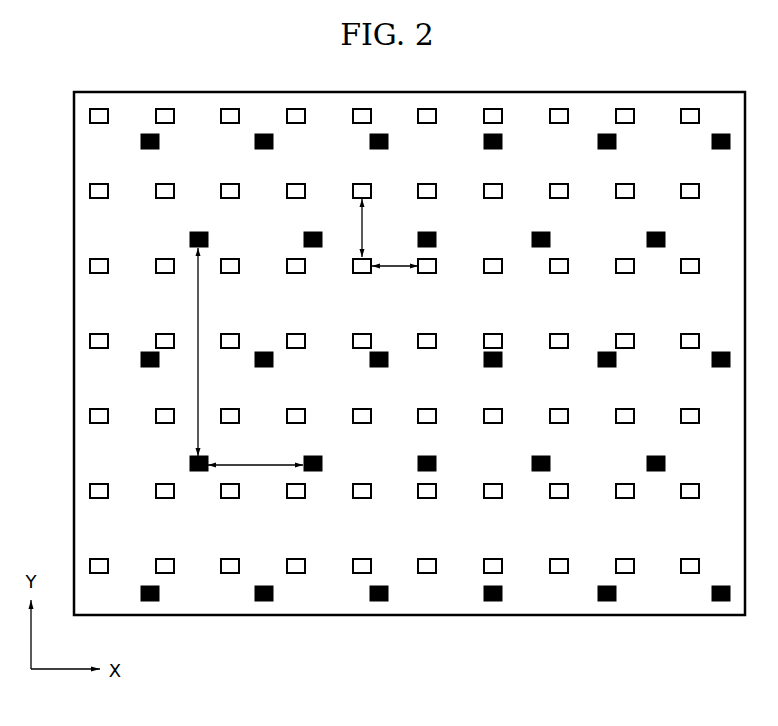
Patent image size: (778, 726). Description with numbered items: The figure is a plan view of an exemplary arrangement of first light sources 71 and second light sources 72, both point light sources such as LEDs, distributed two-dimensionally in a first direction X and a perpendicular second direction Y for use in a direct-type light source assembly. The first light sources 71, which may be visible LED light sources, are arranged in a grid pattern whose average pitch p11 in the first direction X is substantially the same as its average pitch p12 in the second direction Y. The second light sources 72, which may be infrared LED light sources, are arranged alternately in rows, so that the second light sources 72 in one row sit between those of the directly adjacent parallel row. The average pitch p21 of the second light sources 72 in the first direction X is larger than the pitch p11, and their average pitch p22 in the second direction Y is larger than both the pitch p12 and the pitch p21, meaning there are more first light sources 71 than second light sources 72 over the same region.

The first light sources 71 is at (559, 573).
The second light sources 72 is at (492, 601).
The average pitch of the first light sources in the first direction X p11 is at (395, 281).
The average pitch of the first light sources in the second direction Y p12 is at (380, 228).
The average pitch of the second light sources in the first direction X p21 is at (255, 454).
The average pitch of the second light sources in the second direction Y p22 is at (217, 352).